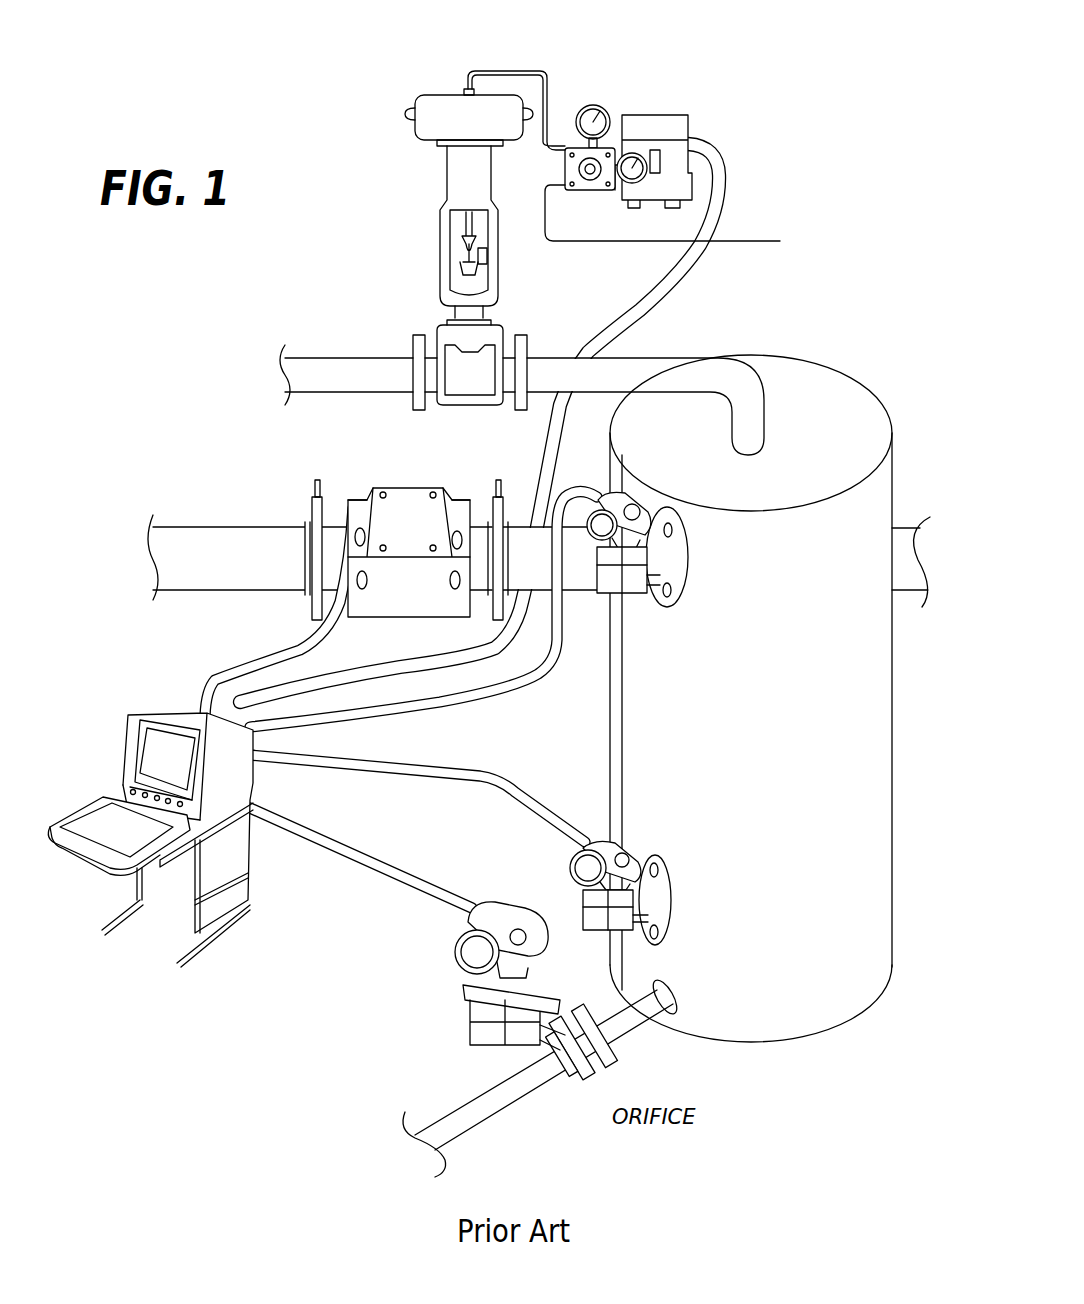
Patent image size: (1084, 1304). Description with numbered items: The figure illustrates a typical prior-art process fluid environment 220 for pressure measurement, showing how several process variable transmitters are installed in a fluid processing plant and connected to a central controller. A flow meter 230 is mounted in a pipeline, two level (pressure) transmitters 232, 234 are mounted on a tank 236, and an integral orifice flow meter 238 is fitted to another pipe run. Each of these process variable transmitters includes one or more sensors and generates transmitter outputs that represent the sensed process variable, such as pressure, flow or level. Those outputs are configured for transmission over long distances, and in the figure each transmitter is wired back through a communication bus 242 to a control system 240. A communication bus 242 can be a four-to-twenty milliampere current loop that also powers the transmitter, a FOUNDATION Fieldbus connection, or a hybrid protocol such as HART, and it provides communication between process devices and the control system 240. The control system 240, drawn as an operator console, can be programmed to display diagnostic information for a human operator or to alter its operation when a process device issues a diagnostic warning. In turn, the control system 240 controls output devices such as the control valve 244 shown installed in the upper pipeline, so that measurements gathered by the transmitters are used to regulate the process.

The process fluid environment 220 is at (720, 90).
The control valve 244 is at (385, 148).
The communication bus 242 is at (690, 294).
The flow meter 230 is at (353, 497).
The tank 236 is at (828, 475).
The level (pressure) transmitter 232 is at (655, 500).
The control system 240 is at (176, 707).
The level (pressure) transmitter 234 is at (678, 882).
The integral orifice flow meter 238 is at (500, 898).